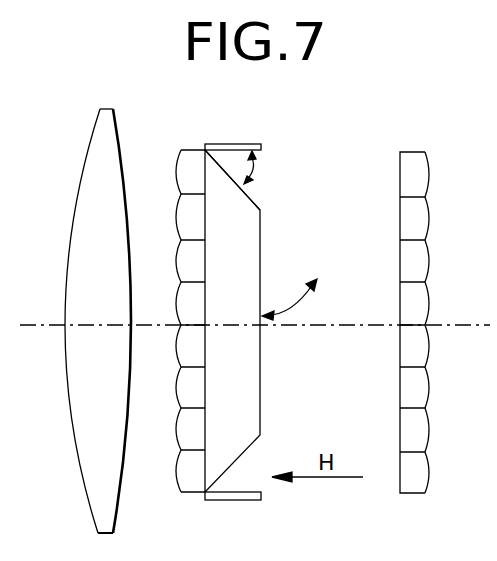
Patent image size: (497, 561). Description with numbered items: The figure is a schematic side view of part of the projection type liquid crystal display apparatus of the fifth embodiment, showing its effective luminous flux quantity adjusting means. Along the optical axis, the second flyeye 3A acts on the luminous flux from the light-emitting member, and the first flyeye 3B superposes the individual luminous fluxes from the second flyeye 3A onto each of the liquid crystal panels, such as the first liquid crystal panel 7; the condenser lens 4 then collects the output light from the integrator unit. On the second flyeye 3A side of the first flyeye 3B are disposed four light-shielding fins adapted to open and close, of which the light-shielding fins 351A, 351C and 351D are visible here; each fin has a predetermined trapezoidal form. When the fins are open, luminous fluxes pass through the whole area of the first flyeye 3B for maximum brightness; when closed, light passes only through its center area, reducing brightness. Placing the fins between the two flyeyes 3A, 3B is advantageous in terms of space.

The condenser lens 4 is at (100, 109).
The first flyeye 3B is at (189, 150).
The second flyeye 3A is at (411, 152).
The light-shielding fin 351A is at (250, 143).
The light-shielding fin 351C is at (245, 503).
The light-shielding fin 351D is at (250, 236).
The first liquid crystal panel 7 is at (260, 388).